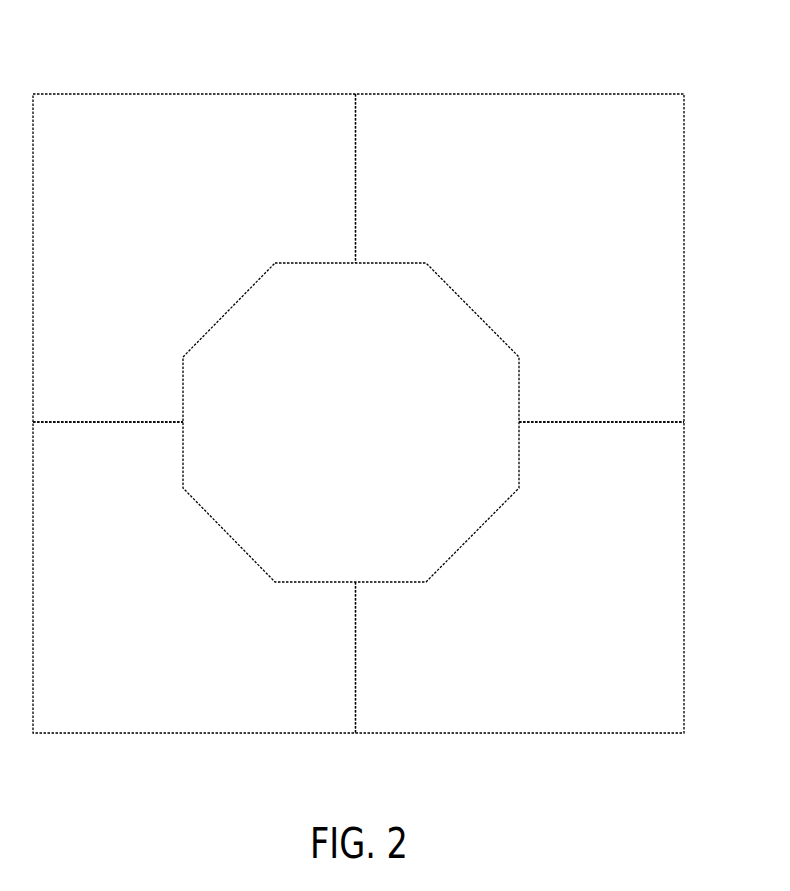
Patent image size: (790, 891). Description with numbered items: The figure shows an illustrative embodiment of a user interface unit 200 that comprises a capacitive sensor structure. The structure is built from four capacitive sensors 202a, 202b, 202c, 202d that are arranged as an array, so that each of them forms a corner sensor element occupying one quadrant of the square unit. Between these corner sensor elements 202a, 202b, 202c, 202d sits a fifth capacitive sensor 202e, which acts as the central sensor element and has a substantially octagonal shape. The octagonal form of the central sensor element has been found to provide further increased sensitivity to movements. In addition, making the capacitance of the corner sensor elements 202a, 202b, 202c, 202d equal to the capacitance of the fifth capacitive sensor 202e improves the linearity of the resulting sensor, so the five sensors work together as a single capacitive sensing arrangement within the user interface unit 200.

The user interface unit 200 is at (148, 93).
The capacitive sensor 202a is at (98, 128).
The capacitive sensor 202b is at (91, 716).
The capacitive sensor 202c is at (660, 134).
The capacitive sensor 202d is at (668, 724).
The fifth capacitive sensor 202e is at (322, 304).